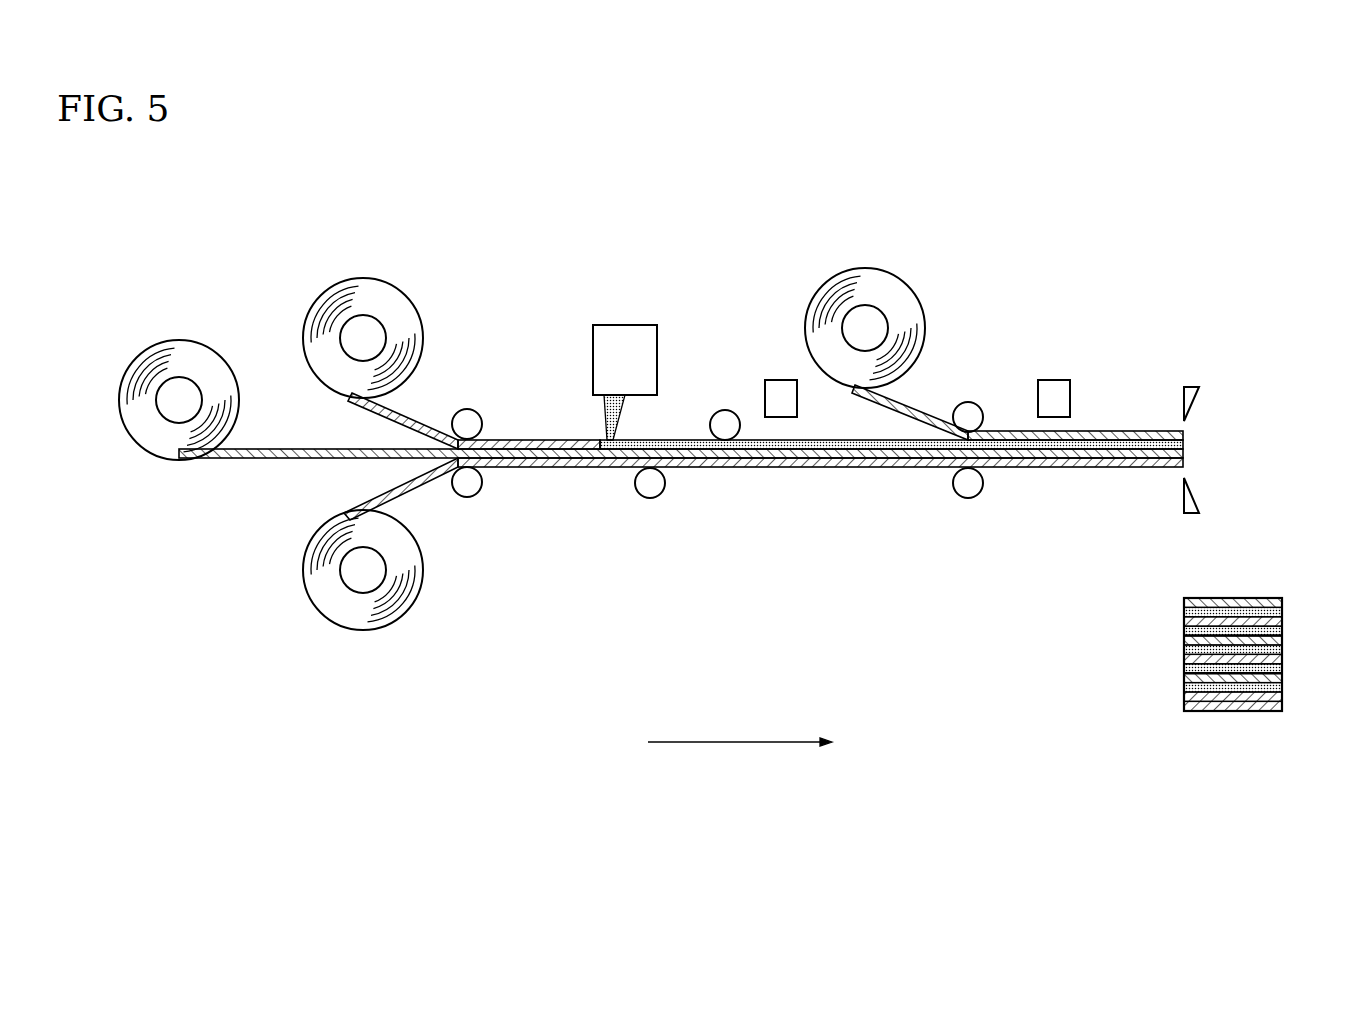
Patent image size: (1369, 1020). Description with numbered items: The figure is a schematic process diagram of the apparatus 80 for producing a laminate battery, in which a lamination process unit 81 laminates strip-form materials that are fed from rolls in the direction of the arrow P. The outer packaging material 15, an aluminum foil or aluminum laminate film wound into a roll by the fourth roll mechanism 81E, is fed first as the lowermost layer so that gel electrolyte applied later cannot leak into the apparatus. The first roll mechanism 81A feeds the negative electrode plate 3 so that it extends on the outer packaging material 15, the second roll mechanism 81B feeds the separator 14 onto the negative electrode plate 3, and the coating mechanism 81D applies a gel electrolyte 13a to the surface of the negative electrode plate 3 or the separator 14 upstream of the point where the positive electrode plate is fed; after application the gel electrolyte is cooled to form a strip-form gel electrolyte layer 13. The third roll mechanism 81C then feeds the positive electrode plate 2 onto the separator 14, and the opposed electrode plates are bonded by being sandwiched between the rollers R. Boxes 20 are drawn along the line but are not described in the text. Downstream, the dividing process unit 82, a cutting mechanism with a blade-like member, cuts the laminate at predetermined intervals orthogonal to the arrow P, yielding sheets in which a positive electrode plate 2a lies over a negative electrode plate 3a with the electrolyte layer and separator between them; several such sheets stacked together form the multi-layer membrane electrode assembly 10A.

The apparatus 80 is at (719, 461).
The lamination process unit 81 is at (200, 239).
The first roll mechanism 81A is at (138, 318).
The second roll mechanism 81B is at (421, 280).
The third roll mechanism 81C is at (922, 272).
The coating mechanism 81D is at (668, 301).
The fourth roll mechanism 81E is at (430, 618).
The dividing process unit 82 is at (1209, 366).
The negative electrode plate 3 is at (196, 342).
The negative electrode plate 3a is at (1186, 620).
The positive electrode plate 2 is at (863, 268).
The positive electrode plate 2a is at (1186, 601).
The separator 14 is at (368, 279).
The gel electrolyte layer 13 is at (686, 440).
The gel electrolyte 13a is at (620, 325).
The outer packaging material 15 is at (362, 631).
The heater 20 is at (783, 380).
The rollers R is at (976, 402).
The arrow P is at (753, 741).
The multi-layer membrane electrode assembly 10A is at (1274, 737).